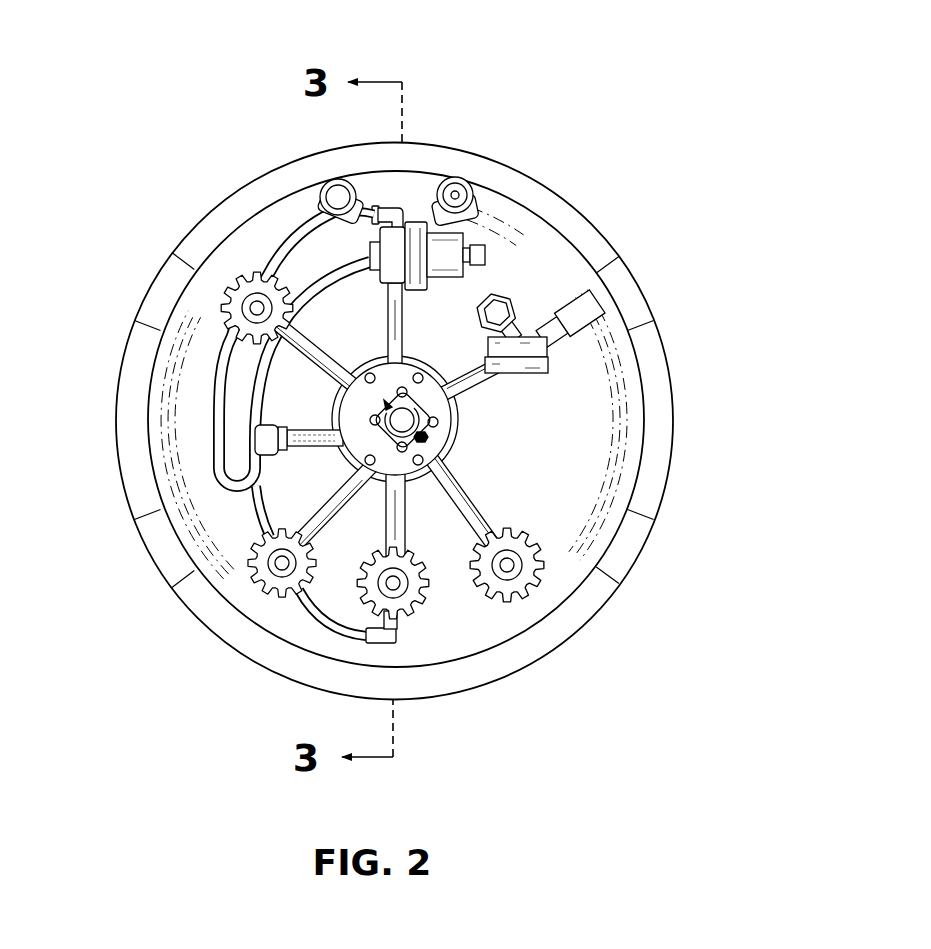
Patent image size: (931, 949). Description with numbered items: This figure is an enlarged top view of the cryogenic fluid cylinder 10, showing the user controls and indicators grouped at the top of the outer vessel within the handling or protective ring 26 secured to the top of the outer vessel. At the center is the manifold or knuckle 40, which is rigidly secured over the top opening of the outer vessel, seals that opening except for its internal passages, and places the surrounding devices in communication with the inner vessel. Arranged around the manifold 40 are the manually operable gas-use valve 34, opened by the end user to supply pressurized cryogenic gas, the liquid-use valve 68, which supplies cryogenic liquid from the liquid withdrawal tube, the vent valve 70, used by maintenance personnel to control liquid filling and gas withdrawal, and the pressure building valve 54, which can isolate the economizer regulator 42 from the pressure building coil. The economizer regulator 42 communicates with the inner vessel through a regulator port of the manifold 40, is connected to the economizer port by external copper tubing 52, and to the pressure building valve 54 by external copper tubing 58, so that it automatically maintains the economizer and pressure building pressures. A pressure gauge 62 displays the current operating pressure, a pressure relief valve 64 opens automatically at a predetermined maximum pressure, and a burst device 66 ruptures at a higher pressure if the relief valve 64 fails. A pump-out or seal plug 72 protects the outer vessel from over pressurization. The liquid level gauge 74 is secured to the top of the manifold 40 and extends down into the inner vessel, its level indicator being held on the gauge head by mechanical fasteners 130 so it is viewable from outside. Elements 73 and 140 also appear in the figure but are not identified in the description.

The cryogenic fluid cylinder 10 is at (566, 78).
The handling ring 26 is at (148, 558).
The gas-use valve 34 is at (515, 603).
The manifold 40 is at (452, 448).
The economizer regulator 42 is at (414, 222).
The external copper tubing 52 is at (213, 421).
The pressure building valve 54 is at (421, 620).
The external copper tubing 58 is at (334, 628).
The pressure gauge 62 is at (534, 380).
The pressure relief valve 64 is at (598, 295).
The burst device 66 is at (520, 288).
The liquid-use valve 68 is at (278, 604).
The vent valve 70 is at (236, 274).
The pump-out plug 72 is at (459, 184).
The fitting 73 is at (326, 183).
The liquid level gauge 74 is at (436, 392).
The mechanical fasteners 130 is at (424, 444).
The hub port 140 is at (437, 421).